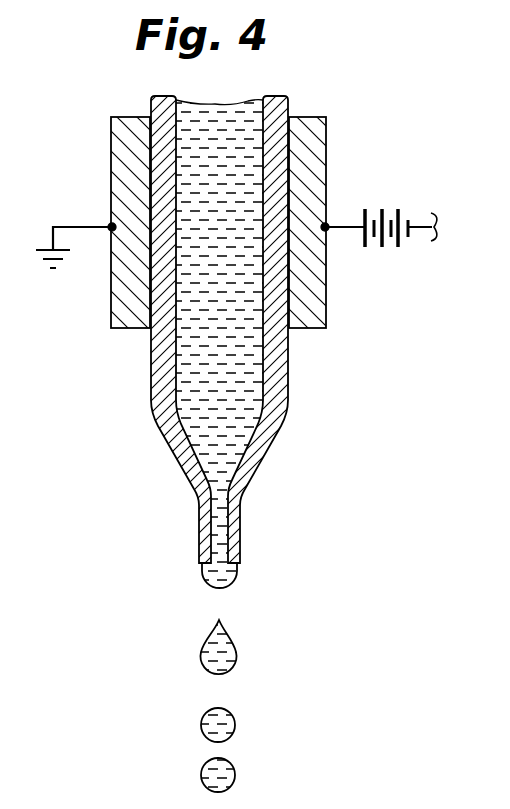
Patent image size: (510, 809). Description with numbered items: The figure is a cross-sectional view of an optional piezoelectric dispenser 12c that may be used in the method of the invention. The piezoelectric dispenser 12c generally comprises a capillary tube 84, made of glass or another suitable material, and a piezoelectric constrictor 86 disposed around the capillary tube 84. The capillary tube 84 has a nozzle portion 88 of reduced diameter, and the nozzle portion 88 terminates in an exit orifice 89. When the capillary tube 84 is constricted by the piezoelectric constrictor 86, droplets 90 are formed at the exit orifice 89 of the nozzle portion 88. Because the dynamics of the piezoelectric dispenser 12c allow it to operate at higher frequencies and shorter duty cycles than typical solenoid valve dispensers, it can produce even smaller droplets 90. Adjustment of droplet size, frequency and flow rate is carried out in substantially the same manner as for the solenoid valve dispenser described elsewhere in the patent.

The piezoelectric dispenser 12c is at (104, 133).
The capillary tube 84 is at (172, 422).
The piezoelectric constrictor 86 is at (327, 138).
The nozzle portion 88 is at (257, 481).
The exit orifice 89 is at (205, 561).
The droplets 90 is at (228, 649).